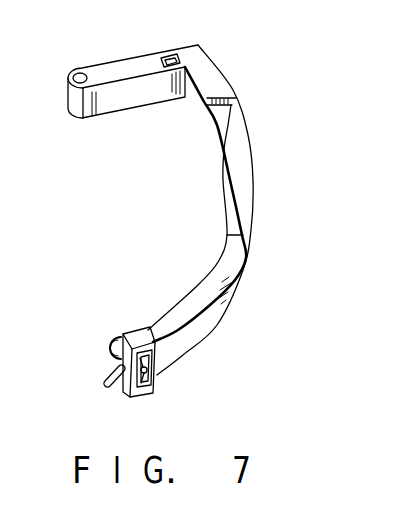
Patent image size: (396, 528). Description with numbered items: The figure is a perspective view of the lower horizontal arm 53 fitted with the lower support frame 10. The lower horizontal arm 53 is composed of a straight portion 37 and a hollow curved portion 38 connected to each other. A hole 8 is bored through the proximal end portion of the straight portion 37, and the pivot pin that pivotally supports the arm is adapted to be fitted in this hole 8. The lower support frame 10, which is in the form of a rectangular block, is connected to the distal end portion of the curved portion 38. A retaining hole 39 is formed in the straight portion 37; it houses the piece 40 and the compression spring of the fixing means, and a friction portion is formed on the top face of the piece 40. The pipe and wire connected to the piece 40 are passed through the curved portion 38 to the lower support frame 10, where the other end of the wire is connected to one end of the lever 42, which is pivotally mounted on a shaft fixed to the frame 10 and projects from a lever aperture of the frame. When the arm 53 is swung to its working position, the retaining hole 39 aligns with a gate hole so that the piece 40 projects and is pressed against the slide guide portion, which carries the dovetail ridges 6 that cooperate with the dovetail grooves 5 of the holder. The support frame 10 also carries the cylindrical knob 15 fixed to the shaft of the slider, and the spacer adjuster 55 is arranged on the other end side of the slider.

The dovetail grooves 5 is at (148, 388).
The dovetail ridges 6 is at (125, 393).
The hole 8 is at (80, 72).
The lower support frame 10 is at (155, 355).
The cylindrical knob 15 is at (148, 370).
The straight portion 37 is at (114, 105).
The hollow curved portion 38 is at (238, 146).
The retaining hole 39 is at (176, 84).
The piece 40 is at (176, 54).
The lever 42 is at (105, 379).
The lower horizontal arm 53 is at (226, 180).
The spacer adjuster 55 is at (106, 343).